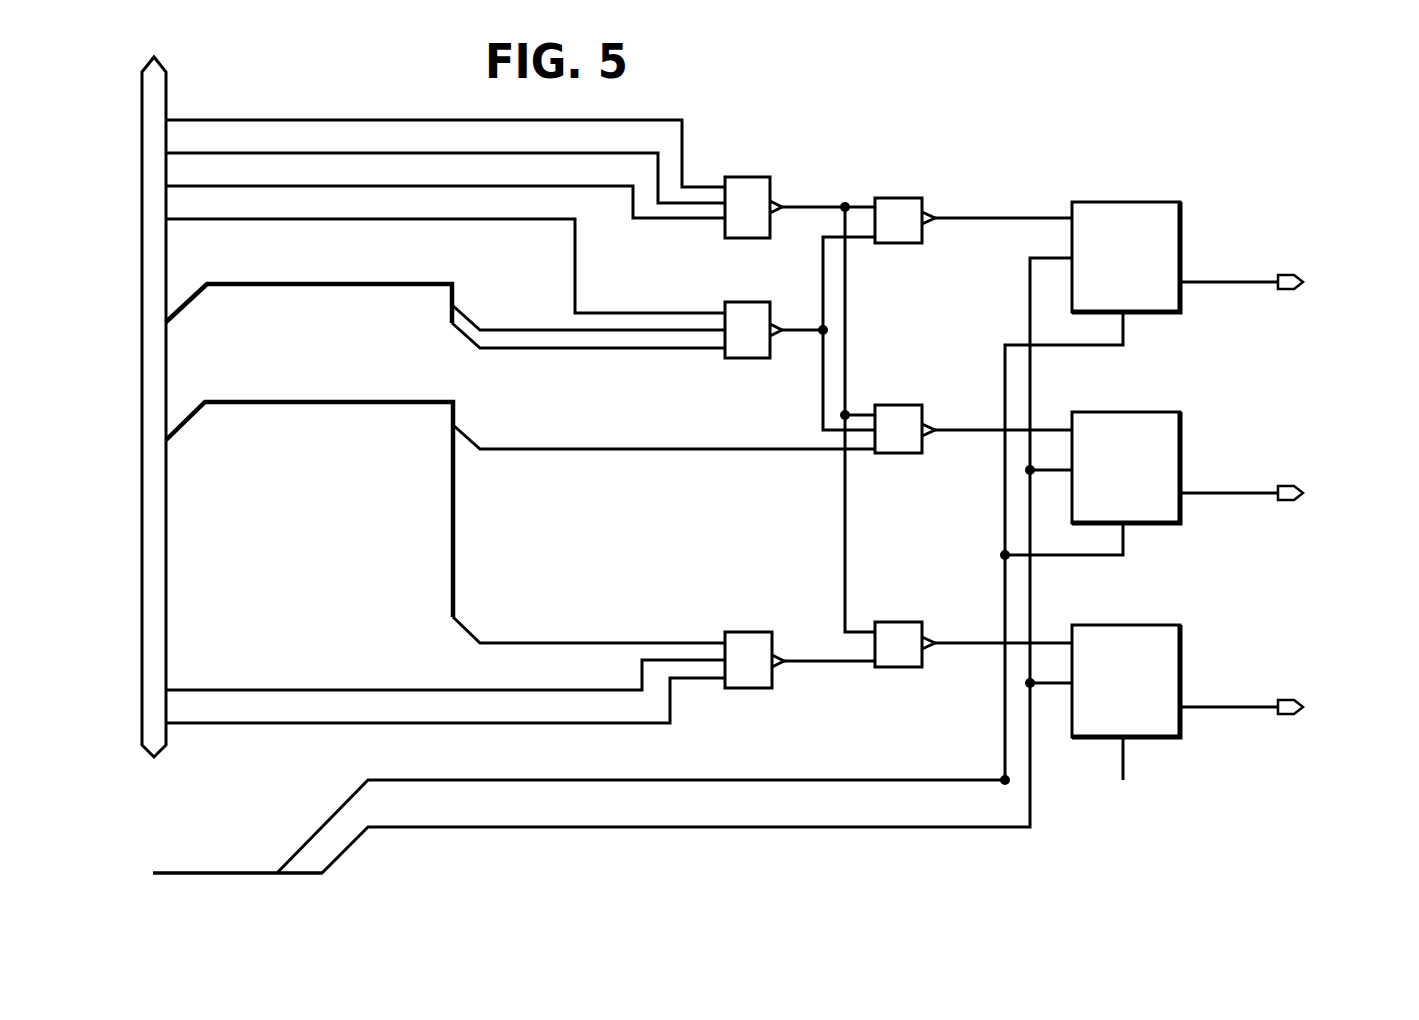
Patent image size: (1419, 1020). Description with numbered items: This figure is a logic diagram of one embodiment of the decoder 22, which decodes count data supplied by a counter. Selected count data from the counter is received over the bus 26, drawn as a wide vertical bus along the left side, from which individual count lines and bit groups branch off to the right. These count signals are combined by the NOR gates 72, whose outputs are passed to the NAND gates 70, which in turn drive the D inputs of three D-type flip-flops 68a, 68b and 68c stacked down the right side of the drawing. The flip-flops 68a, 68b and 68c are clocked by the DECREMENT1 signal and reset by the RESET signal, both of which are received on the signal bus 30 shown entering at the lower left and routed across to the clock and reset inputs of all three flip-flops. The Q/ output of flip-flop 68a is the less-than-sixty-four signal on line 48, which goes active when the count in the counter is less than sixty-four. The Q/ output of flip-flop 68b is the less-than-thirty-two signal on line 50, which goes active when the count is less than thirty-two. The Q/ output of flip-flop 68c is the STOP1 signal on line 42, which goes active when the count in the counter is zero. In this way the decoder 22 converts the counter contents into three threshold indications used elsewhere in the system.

The decoder 22 is at (1022, 130).
The bus 26 is at (142, 107).
The signal bus 30 is at (218, 873).
The line 42 is at (1240, 707).
The line 48 is at (1240, 282).
The line 50 is at (1238, 493).
The D-type flip-flop 68a is at (1153, 202).
The D-type flip-flop 68b is at (1152, 412).
The D-type flip-flop 68c is at (1152, 625).
The NAND gate 70 is at (905, 198).
The NOR gate 72 is at (755, 177).